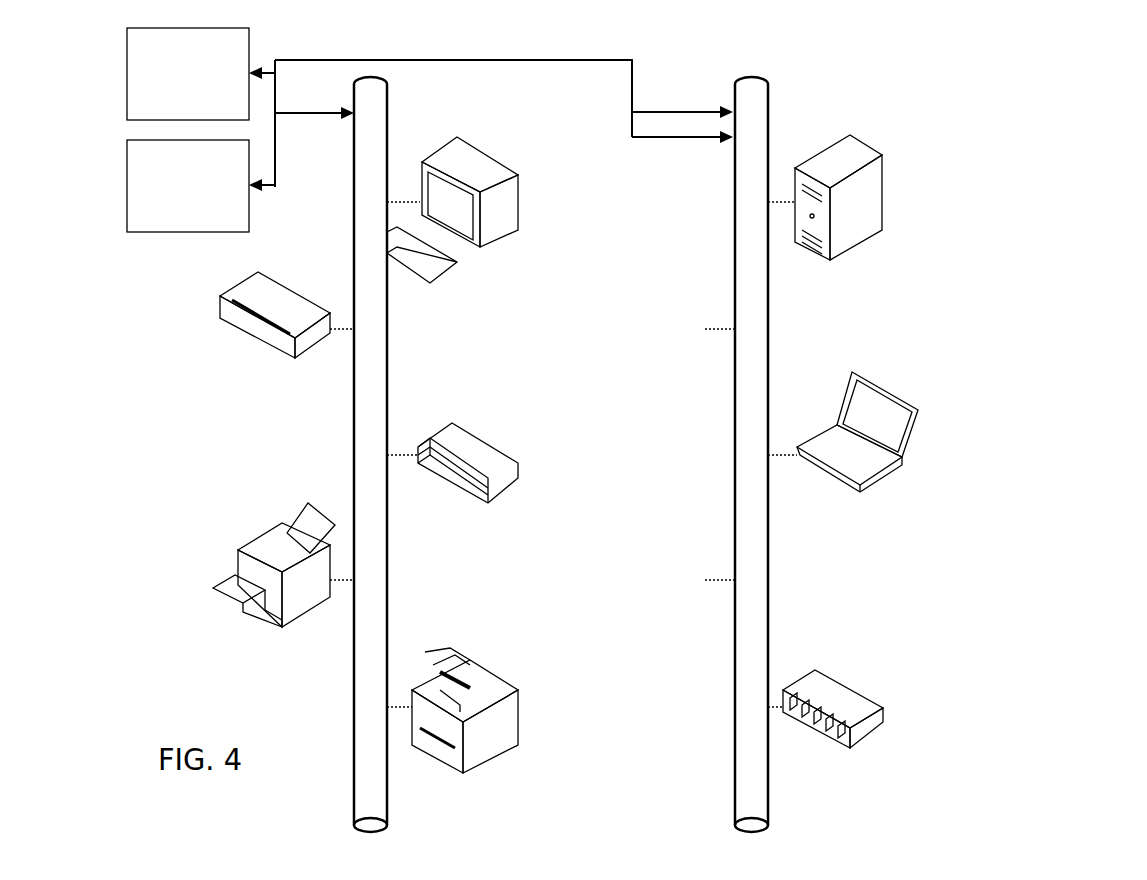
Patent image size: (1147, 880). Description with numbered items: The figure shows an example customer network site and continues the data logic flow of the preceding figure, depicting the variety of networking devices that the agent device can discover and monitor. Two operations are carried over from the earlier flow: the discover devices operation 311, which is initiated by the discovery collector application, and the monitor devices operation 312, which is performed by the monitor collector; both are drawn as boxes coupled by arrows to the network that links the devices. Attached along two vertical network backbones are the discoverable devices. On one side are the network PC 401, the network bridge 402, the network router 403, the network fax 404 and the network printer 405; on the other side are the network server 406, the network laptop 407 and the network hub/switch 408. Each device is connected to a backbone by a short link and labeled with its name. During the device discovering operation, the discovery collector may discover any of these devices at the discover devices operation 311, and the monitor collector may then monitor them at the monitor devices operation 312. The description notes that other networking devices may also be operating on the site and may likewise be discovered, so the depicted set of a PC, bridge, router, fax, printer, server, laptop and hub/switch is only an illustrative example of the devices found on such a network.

The discover devices operation 311 is at (188, 186).
The monitor devices operation 312 is at (188, 74).
The network PC 401 is at (512, 170).
The network bridge 402 is at (220, 320).
The network router 403 is at (488, 440).
The network fax 404 is at (248, 543).
The network printer 405 is at (505, 695).
The network server 406 is at (885, 192).
The network laptop 407 is at (910, 437).
The network hub/switch 408 is at (858, 690).